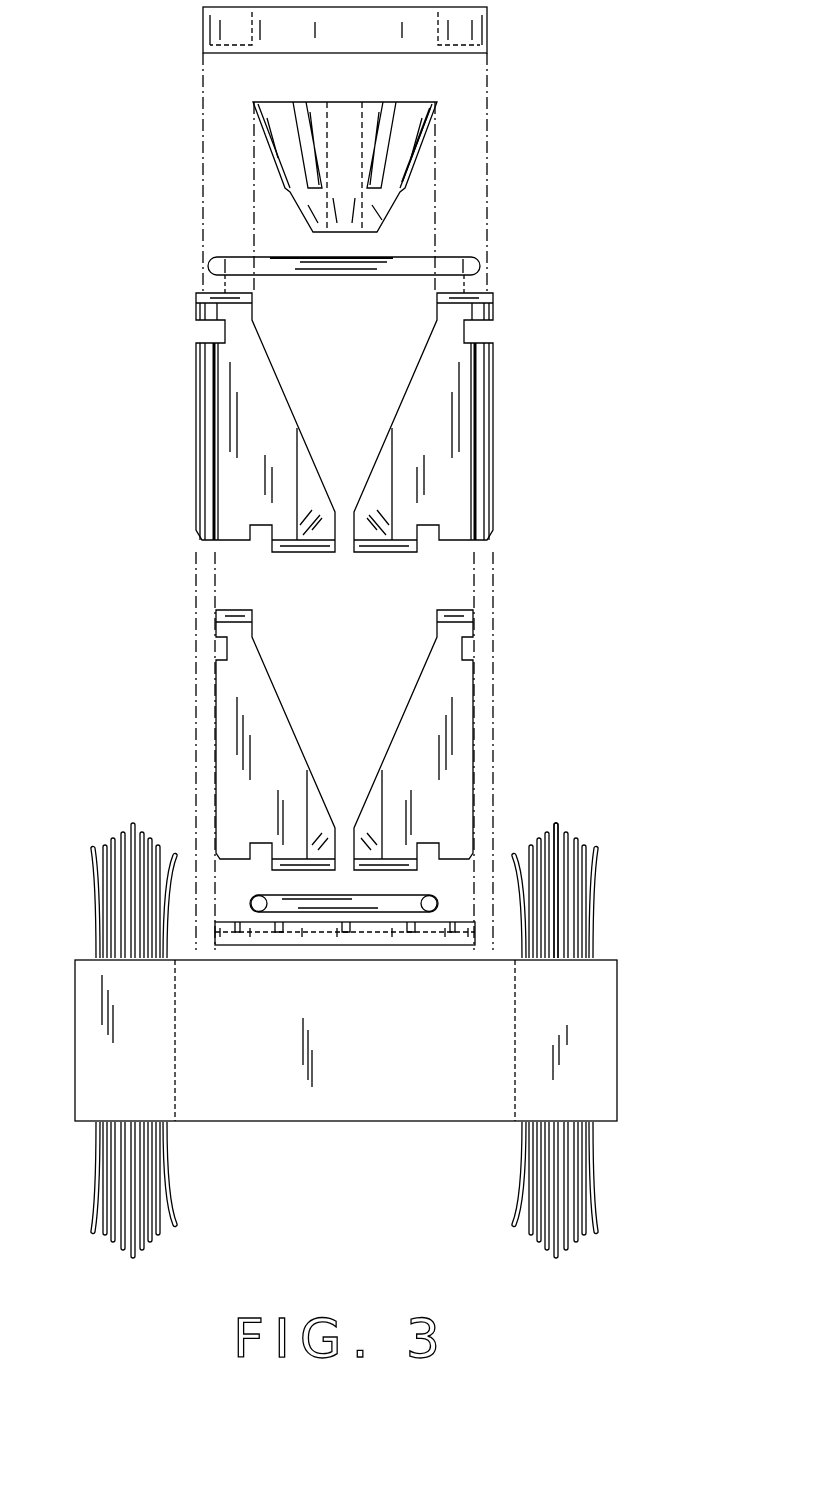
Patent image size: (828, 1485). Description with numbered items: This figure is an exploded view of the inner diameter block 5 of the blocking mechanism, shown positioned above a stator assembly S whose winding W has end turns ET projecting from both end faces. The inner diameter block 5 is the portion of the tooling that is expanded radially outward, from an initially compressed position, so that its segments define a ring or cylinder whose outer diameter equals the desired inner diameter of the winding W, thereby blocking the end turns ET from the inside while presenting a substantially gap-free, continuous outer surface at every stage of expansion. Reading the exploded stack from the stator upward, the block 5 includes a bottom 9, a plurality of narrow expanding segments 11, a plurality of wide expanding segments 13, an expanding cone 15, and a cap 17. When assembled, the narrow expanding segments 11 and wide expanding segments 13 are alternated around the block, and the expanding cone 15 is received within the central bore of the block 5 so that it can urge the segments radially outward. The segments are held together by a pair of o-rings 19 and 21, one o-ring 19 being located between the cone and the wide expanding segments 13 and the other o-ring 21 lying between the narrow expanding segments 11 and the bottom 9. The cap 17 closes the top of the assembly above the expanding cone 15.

The inner diameter block 5 is at (520, 540).
The bottom 9 is at (468, 922).
The narrow expanding segments 11 is at (475, 738).
The wide expanding segments 13 is at (493, 423).
The expanding cone 15 is at (383, 212).
The cap 17 is at (487, 32).
The o-ring 19 is at (480, 258).
The o-ring 21 is at (260, 895).
The end turns ET is at (573, 835).
The winding W is at (593, 887).
The stator assembly S is at (617, 1047).